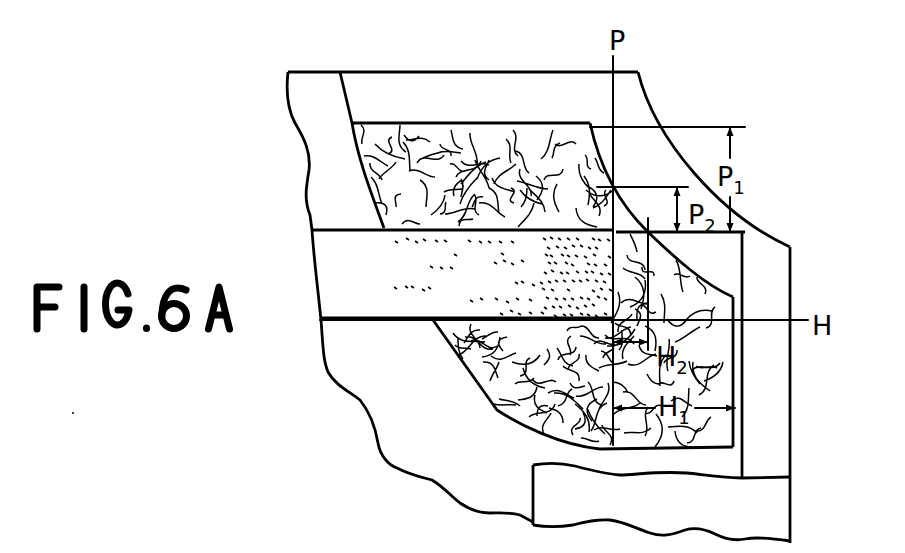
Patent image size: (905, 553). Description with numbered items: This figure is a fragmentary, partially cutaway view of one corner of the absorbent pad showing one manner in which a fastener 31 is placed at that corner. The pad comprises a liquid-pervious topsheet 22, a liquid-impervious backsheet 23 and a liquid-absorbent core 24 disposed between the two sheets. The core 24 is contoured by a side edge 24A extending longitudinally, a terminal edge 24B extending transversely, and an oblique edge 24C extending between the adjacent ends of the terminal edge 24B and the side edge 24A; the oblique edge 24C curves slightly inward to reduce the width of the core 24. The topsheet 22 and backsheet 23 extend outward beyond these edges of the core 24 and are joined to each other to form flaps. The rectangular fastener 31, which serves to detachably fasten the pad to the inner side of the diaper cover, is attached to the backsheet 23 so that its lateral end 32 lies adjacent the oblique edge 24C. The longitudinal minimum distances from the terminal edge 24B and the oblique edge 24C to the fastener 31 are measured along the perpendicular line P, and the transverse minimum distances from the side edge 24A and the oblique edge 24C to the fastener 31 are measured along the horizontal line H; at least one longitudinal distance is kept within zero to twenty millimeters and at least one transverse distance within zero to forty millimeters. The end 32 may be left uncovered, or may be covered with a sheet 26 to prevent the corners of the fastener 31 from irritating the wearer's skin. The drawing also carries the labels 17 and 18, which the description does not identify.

The base member 17 is at (790, 503).
The housing body 18 is at (314, 72).
The topsheet 22 is at (638, 104).
The backsheet 23 is at (310, 122).
The liquid-absorbent core 24 is at (517, 143).
The side edges 24A is at (735, 352).
The terminal edges 24B is at (385, 123).
The oblique edges 24C is at (598, 163).
The sheet 26 is at (762, 243).
The fastener 31 is at (389, 332).
The end of the fastener 32 is at (472, 320).